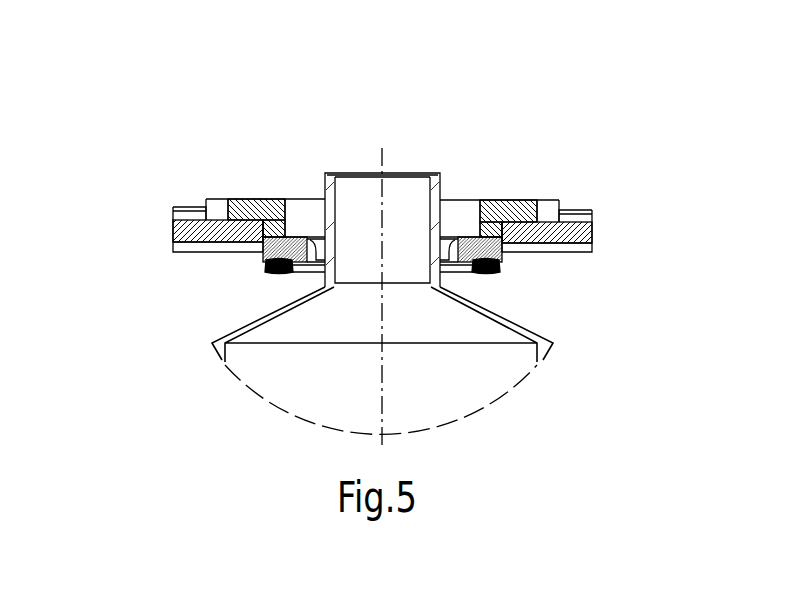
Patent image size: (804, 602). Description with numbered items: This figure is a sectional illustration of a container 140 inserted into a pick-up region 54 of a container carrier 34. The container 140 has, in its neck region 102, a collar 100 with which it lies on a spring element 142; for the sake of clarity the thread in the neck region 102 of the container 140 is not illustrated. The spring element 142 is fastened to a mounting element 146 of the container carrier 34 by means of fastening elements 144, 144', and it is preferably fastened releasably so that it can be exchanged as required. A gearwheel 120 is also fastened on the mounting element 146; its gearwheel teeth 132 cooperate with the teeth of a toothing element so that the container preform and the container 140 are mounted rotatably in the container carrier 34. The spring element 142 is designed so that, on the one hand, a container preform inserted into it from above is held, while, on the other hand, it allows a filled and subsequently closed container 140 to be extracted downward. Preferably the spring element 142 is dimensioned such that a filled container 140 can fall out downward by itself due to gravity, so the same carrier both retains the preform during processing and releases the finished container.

The container carrier 34 is at (187, 210).
The pick-up region 54 is at (415, 147).
The collar 100 is at (320, 237).
The neck region 102 is at (443, 181).
The gearwheel 120 is at (525, 193).
The gearwheel teeth 132 is at (593, 230).
The container 140 is at (545, 352).
The spring element 142 is at (455, 287).
The fastening element 144 is at (586, 289).
The fastening element 144' is at (234, 281).
The mounting element 146 is at (500, 262).